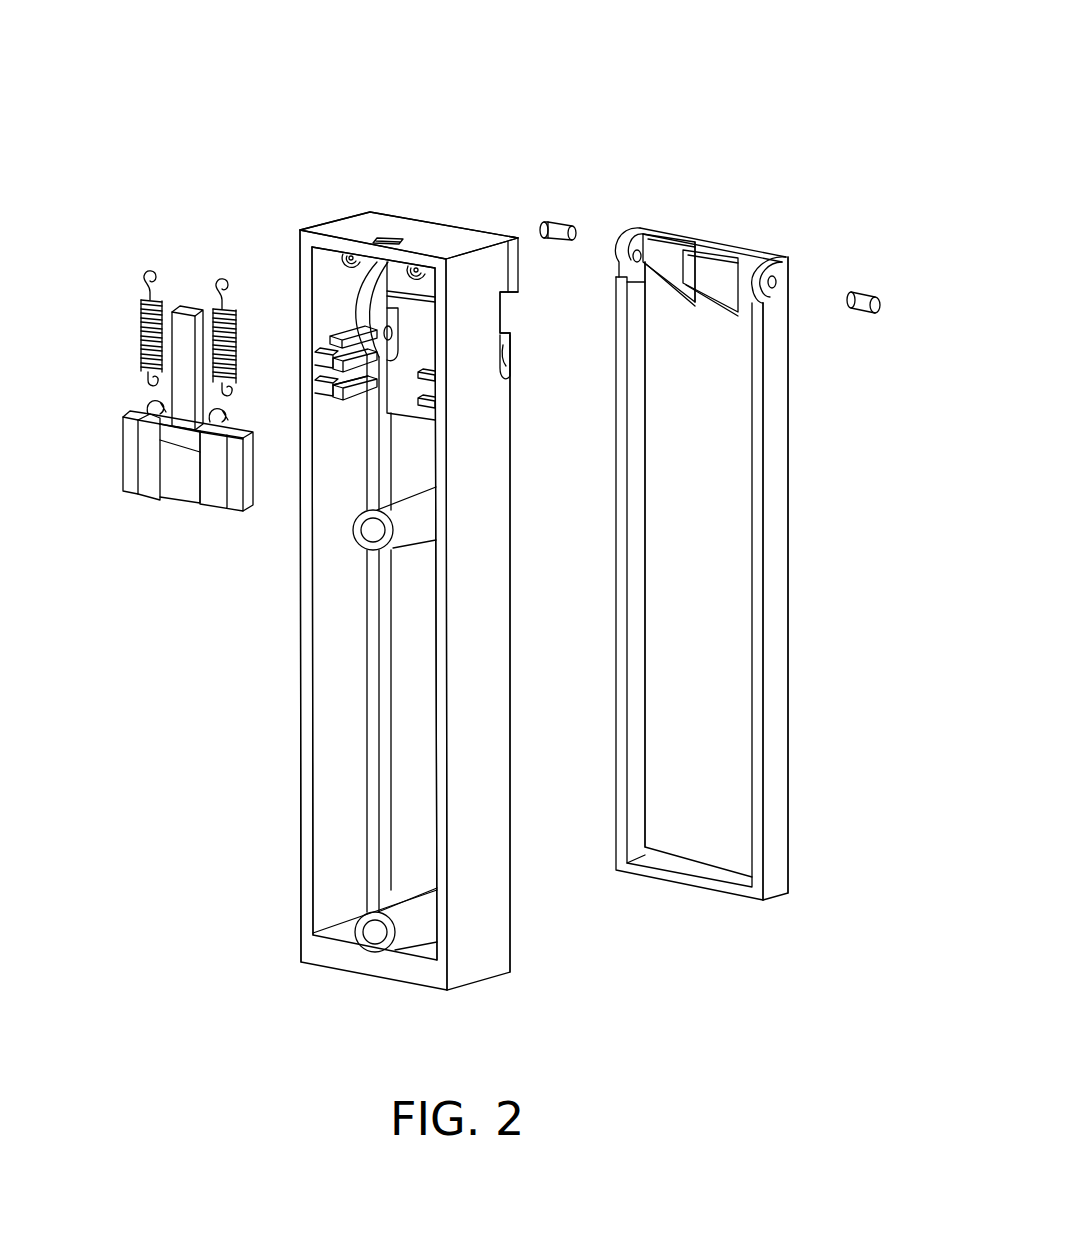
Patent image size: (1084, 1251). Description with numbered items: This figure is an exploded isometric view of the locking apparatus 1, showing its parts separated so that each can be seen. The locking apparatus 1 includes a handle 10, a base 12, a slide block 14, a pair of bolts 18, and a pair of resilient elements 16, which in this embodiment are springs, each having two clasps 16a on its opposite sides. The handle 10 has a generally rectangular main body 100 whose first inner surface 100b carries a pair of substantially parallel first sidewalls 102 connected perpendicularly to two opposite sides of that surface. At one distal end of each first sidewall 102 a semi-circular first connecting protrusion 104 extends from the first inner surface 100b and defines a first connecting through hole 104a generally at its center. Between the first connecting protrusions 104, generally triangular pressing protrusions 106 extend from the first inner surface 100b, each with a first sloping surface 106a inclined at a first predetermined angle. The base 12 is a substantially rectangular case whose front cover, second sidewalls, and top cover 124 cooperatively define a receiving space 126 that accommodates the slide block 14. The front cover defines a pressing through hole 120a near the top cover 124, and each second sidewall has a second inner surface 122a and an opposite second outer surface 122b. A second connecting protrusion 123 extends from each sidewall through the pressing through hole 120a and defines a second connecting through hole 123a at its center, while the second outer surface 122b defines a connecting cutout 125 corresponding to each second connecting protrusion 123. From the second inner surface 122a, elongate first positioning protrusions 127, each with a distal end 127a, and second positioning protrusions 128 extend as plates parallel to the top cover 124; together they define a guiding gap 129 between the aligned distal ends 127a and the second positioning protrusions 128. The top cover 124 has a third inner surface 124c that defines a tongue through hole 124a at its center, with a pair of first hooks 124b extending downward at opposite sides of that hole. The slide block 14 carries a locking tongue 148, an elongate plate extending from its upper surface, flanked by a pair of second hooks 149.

The locking apparatus 1 is at (466, 28).
The handle 10 is at (798, 607).
The base 12 is at (500, 983).
The slide block 14 is at (178, 512).
The resilient elements 16 is at (140, 322).
The clasps 16a is at (148, 278).
The bolts 18 is at (850, 293).
The main body 100 is at (722, 663).
The first inner surface 100b is at (722, 492).
The first sidewalls 102 is at (777, 420).
The first connecting protrusions 104 is at (776, 290).
The first connecting through hole 104a is at (830, 245).
The pressing protrusions 106 is at (722, 290).
The first sloping surface 106a is at (710, 293).
The pressing through hole 120a is at (420, 355).
The second inner surface 122a is at (337, 768).
The second outer surface 122b is at (485, 912).
The second connecting protrusions 123 is at (400, 322).
The second connecting through hole 123a is at (384, 326).
The top cover 124 is at (430, 226).
The tongue through hole 124a is at (390, 236).
The first hooks 124b is at (350, 262).
The third inner surface 124c is at (323, 255).
The connecting cutout 125 is at (503, 318).
The receiving space 126 is at (415, 675).
The first positioning protrusions 127 is at (338, 395).
The distal end 127a is at (333, 335).
The second positioning protrusions 128 is at (330, 368).
The guiding gap 129 is at (330, 340).
The locking tongue 148 is at (185, 333).
The second hooks 149 is at (158, 405).